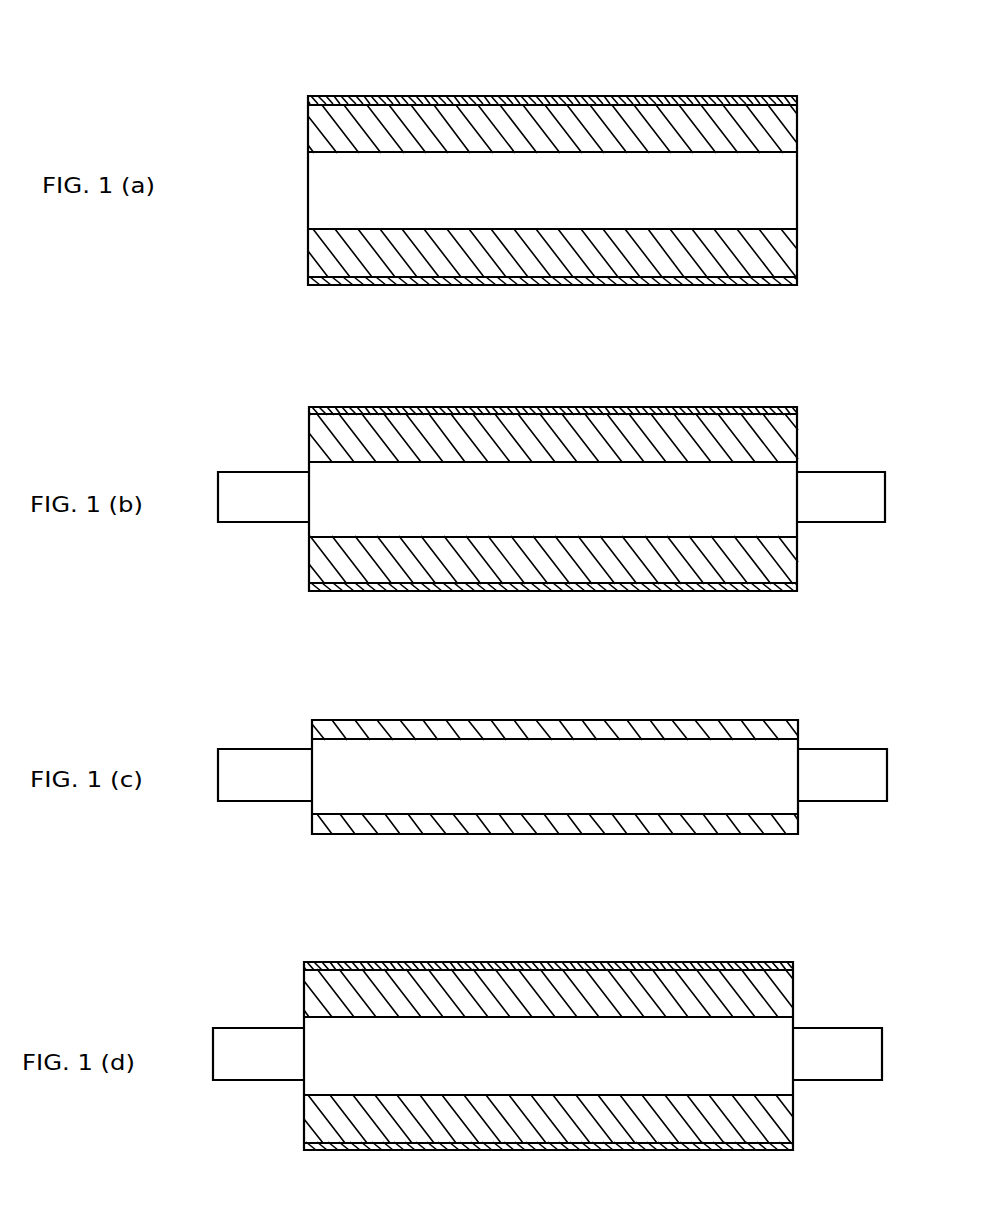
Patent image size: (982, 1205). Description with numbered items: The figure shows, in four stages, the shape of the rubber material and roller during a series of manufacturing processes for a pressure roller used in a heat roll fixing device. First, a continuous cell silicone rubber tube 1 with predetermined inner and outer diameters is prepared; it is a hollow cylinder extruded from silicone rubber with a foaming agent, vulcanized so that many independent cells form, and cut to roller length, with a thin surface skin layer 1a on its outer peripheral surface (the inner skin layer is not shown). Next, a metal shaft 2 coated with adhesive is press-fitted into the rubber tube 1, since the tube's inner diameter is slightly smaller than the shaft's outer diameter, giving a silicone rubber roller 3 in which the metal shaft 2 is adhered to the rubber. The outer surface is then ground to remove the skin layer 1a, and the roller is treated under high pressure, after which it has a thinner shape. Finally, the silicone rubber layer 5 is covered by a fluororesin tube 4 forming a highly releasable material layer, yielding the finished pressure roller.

In FIG. 1a, the continuous cell silicone rubber tube 1 is at (826, 114).
In FIG. 1b, the continuous cell silicone rubber tube 1 is at (701, 440).
In FIG. 1c, the continuous cell silicone rubber tube 1 is at (340, 725).
In FIG. 1a, the surface skin layer 1a is at (629, 96).
In FIG. 1b, the surface skin layer 1a is at (540, 406).
In FIG. 1b, the metal shaft 2 is at (248, 471).
In FIG. 1c, the metal shaft 2 is at (250, 745).
In FIG. 1d, the metal shaft 2 is at (258, 1027).
In FIG. 1b, the silicone rubber roller 3 is at (552, 465).
In FIG. 1d, the fluororesin tube 4 is at (765, 962).
In FIG. 1d, the silicone rubber layer 5 is at (333, 980).